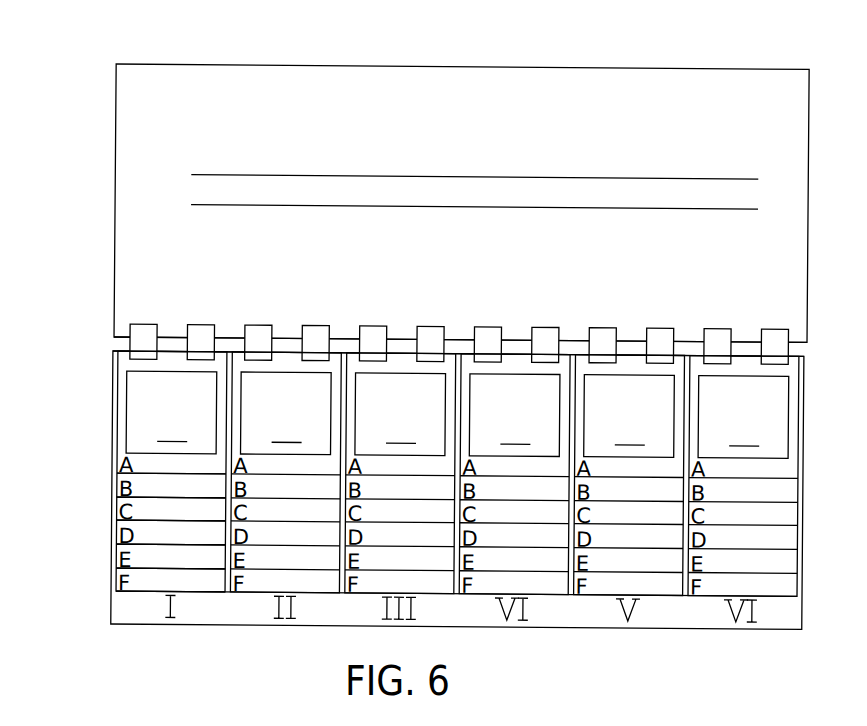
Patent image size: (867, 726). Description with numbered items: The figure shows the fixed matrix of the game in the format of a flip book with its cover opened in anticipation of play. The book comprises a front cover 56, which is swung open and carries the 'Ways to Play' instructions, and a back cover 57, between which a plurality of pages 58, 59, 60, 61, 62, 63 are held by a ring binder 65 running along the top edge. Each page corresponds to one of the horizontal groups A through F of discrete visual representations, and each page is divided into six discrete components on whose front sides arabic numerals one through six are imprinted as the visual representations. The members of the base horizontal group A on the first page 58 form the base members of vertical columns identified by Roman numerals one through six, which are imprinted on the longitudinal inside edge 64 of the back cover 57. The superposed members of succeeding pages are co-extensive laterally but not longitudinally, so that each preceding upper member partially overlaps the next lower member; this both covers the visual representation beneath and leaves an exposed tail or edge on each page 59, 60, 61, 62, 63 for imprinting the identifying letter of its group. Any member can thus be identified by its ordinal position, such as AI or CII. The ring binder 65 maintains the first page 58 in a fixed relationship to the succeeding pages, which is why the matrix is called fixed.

The front cover 56 is at (153, 64).
The back cover 57 is at (128, 624).
The page 58 is at (115, 437).
The page 59 is at (118, 485).
The page 60 is at (118, 508).
The page 61 is at (118, 530).
The page 62 is at (118, 556).
The page 63 is at (118, 578).
The longitudinal inside edge of back cover 64 is at (797, 608).
The ring binder 65 is at (792, 351).